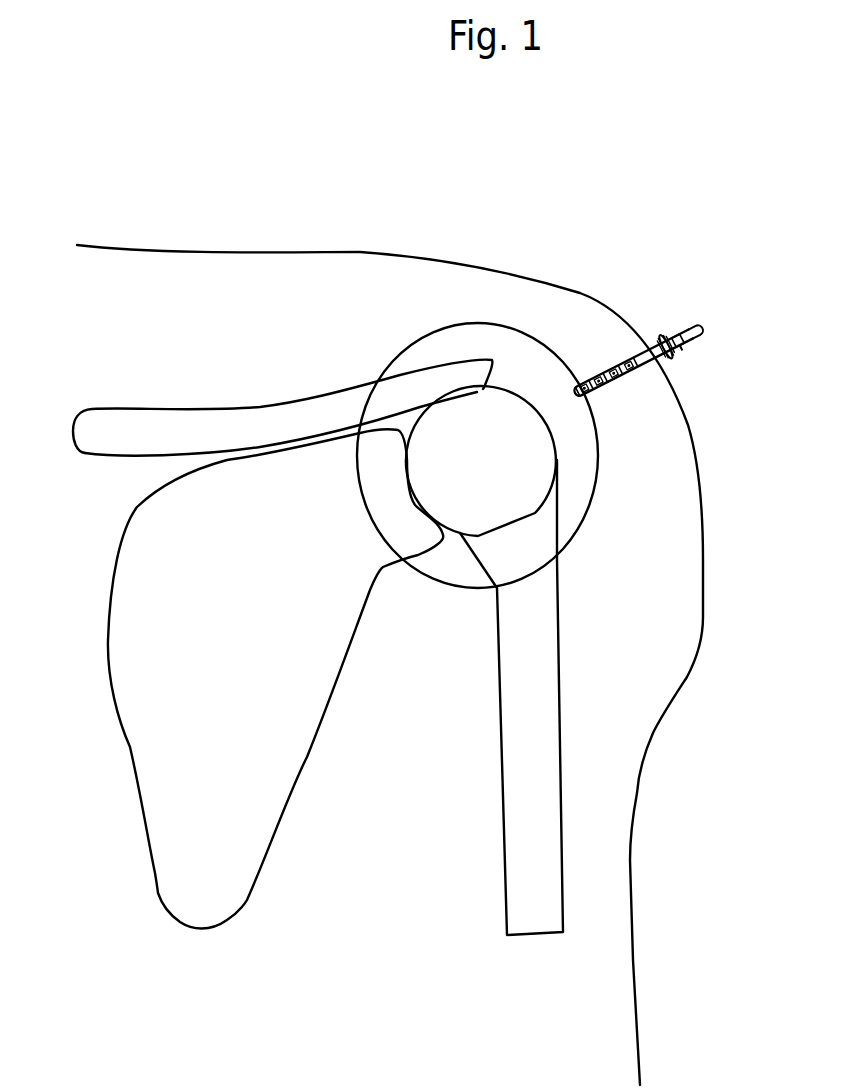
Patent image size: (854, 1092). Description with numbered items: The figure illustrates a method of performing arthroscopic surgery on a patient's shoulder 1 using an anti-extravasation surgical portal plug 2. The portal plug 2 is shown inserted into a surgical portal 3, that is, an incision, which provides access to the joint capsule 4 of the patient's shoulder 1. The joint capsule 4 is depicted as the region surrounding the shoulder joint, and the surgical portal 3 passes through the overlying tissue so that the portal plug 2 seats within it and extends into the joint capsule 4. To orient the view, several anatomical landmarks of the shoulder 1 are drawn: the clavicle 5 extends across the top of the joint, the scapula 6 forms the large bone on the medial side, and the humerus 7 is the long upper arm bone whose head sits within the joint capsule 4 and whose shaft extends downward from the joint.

The shoulder 1 is at (538, 202).
The anti-extravasation surgical portal plug 2 is at (680, 360).
The surgical portal 3 is at (605, 365).
The joint capsule 4 is at (398, 353).
The clavicle 5 is at (115, 403).
The scapula 6 is at (117, 692).
The humerus 7 is at (500, 787).